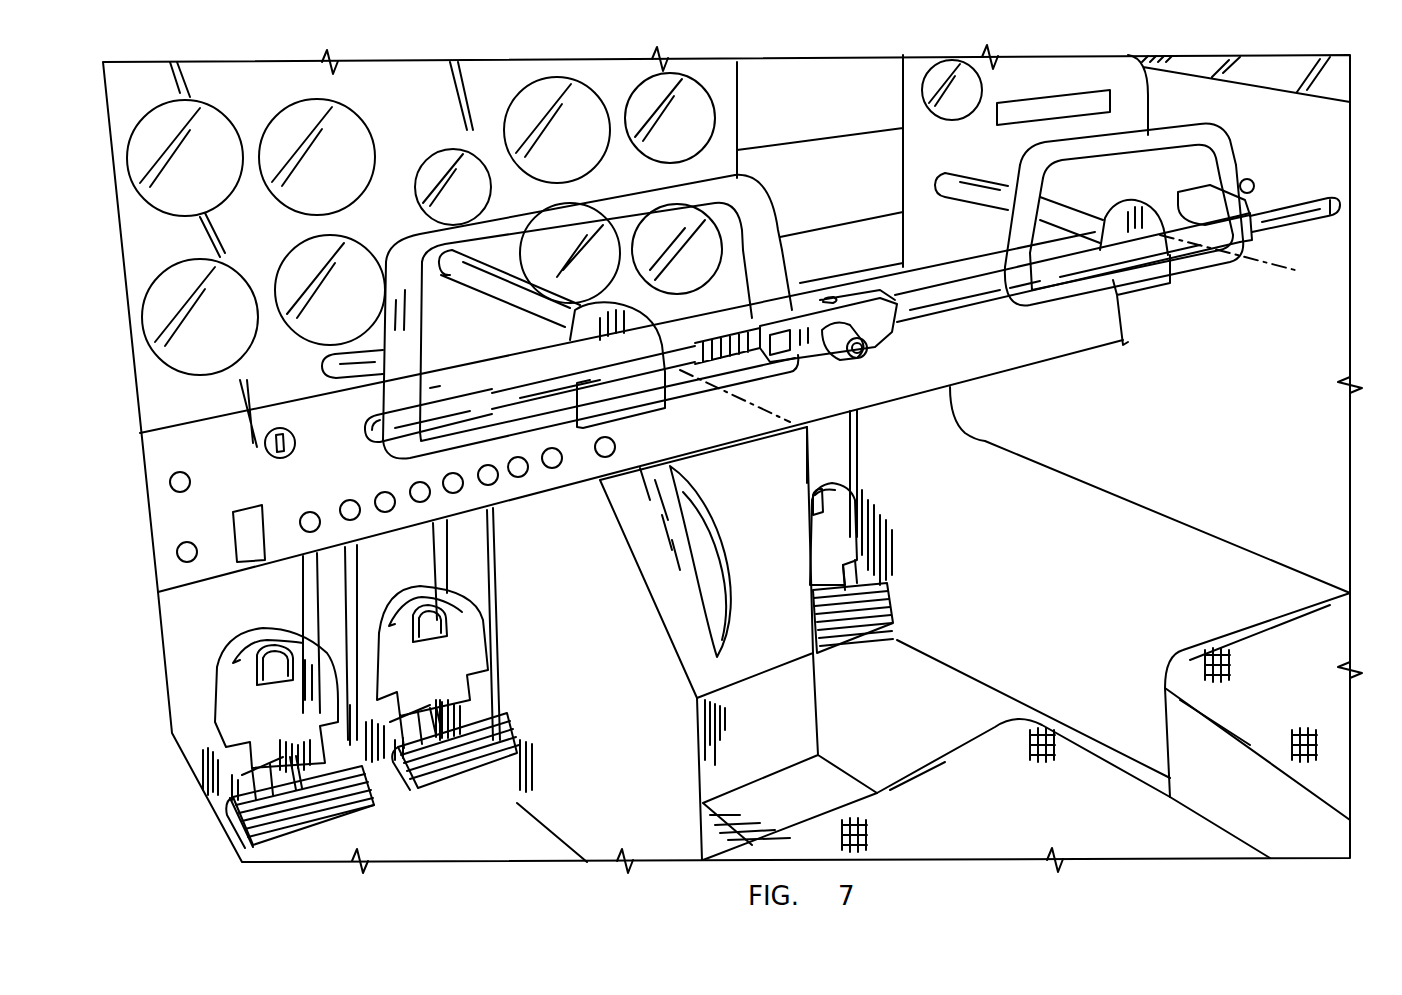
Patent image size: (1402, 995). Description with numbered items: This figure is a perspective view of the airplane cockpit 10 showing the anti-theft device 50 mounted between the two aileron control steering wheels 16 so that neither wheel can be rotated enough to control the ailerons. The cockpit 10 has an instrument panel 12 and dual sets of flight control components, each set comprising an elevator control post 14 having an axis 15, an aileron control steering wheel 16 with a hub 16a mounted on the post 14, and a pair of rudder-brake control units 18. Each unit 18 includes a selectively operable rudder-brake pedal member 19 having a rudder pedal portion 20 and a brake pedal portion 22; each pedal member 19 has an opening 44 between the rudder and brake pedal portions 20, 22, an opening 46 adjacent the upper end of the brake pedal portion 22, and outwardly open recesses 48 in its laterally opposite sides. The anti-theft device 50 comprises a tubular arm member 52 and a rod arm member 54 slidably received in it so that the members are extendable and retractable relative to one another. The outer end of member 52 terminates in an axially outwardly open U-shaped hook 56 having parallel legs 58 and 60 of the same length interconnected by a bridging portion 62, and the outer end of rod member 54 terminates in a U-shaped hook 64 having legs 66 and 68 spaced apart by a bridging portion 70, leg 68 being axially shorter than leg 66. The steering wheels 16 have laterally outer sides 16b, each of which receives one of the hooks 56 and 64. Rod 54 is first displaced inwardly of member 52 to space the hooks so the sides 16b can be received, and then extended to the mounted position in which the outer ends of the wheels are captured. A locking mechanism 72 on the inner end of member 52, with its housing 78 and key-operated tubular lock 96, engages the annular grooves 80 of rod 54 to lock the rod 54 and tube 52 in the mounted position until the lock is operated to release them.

The airplane cockpit 10 is at (1322, 436).
The instrument panel 12 is at (147, 255).
The elevator control post 14 is at (535, 300).
The axis 15 is at (758, 413).
The aileron control steering wheel 16 is at (513, 195).
The hub 16a is at (640, 405).
The laterally outer side 16b is at (392, 307).
The rudder-brake control unit 18 is at (190, 630).
The rudder-brake pedal member 19 is at (295, 842).
The rudder pedal portion 20 is at (258, 835).
The brake pedal portion 22 is at (235, 693).
The opening 44 is at (268, 757).
The opening 46 is at (262, 665).
The outwardly open recess 48 is at (250, 775).
The anti-theft device 50 is at (948, 338).
The arm member 52 is at (1080, 295).
The arm member 54 is at (537, 407).
The U-shaped hook 56 is at (1290, 198).
The leg 58 is at (1313, 216).
The leg 60 is at (1208, 200).
The bridging portion 62 is at (1210, 200).
The U-shaped hook 64 is at (360, 419).
The leg 66 is at (388, 430).
The leg 68 is at (322, 363).
The bridging portion 70 is at (435, 385).
The locking mechanism 72 is at (828, 365).
The housing 78 is at (847, 297).
The annular groove 80 is at (725, 348).
The key-operated tubular lock 96 is at (872, 352).